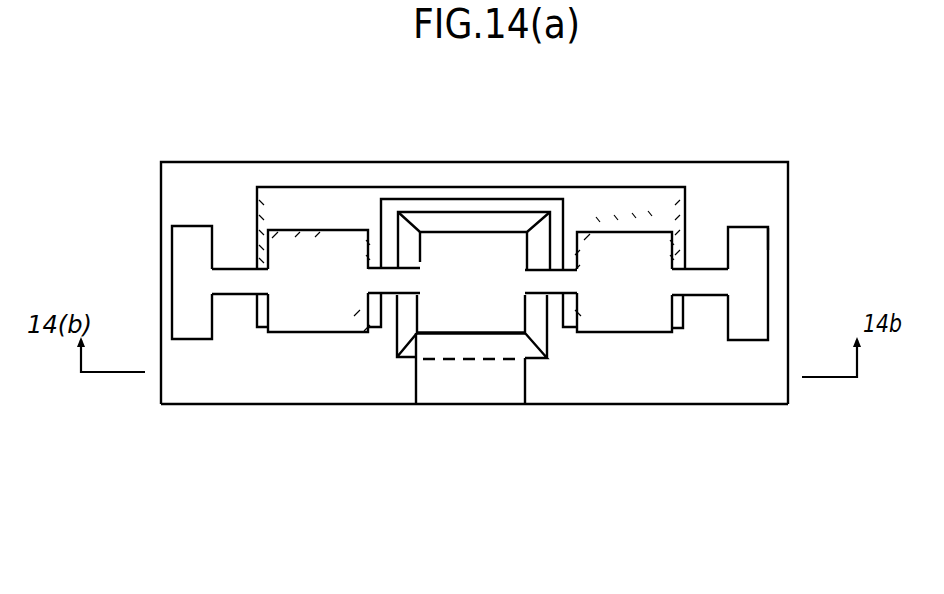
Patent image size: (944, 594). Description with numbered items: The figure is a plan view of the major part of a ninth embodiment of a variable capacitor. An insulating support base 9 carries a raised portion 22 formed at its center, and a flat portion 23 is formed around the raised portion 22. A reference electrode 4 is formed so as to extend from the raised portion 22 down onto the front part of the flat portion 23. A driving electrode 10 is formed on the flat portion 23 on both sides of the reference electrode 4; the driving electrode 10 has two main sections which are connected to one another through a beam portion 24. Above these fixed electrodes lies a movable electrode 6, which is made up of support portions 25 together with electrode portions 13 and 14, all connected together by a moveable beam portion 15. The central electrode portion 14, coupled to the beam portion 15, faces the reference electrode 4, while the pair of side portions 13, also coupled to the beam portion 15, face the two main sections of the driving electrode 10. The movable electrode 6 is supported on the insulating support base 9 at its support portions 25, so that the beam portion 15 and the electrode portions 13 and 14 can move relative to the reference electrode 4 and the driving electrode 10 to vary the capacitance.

The reference electrode 4 is at (500, 405).
The movable electrode 6 is at (769, 233).
The insulating support base 9 is at (713, 385).
The driving electrode 10 is at (292, 187).
The side portions 13 is at (312, 333).
The central electrode portion 14 is at (480, 230).
The moveable beam portion 15 is at (238, 297).
The raised portion 22 is at (395, 338).
The flat portion 23 is at (188, 380).
The beam portion 24 is at (417, 187).
The support portions 25 is at (170, 323).